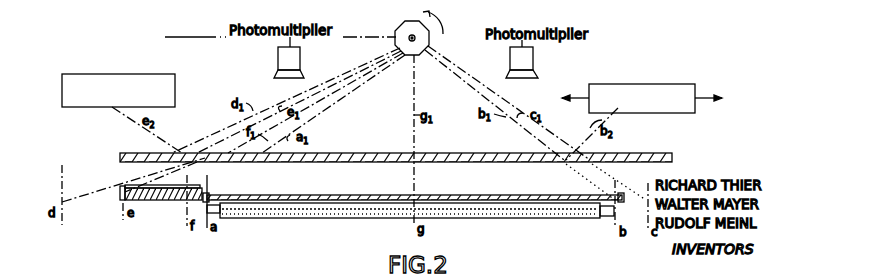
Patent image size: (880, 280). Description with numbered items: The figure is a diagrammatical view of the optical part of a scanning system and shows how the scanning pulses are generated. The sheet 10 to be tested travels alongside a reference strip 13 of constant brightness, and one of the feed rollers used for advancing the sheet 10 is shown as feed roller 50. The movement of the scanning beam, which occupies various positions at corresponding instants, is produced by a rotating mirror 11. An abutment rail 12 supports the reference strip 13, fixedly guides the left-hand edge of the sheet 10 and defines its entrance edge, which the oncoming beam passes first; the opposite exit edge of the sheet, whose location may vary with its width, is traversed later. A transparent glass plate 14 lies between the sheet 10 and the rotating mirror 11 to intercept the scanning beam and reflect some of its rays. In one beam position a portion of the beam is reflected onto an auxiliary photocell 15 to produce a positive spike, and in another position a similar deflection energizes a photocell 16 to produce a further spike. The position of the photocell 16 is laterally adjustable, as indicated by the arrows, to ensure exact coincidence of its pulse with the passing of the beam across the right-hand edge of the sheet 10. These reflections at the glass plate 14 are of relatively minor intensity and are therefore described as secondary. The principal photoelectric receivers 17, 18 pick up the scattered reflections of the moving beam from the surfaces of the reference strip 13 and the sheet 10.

The sheet 10 is at (358, 194).
The rotating mirror 11 is at (428, 45).
The abutment rail 12 is at (148, 201).
The reference strip 13 is at (134, 186).
The transparent glass plate 14 is at (266, 162).
The auxiliary photocell 15 is at (155, 74).
The photocell 16 is at (682, 84).
The photoelectric receiver 17 is at (300, 57).
The photoelectric receiver 18 is at (533, 57).
The feed roller 50 is at (410, 219).